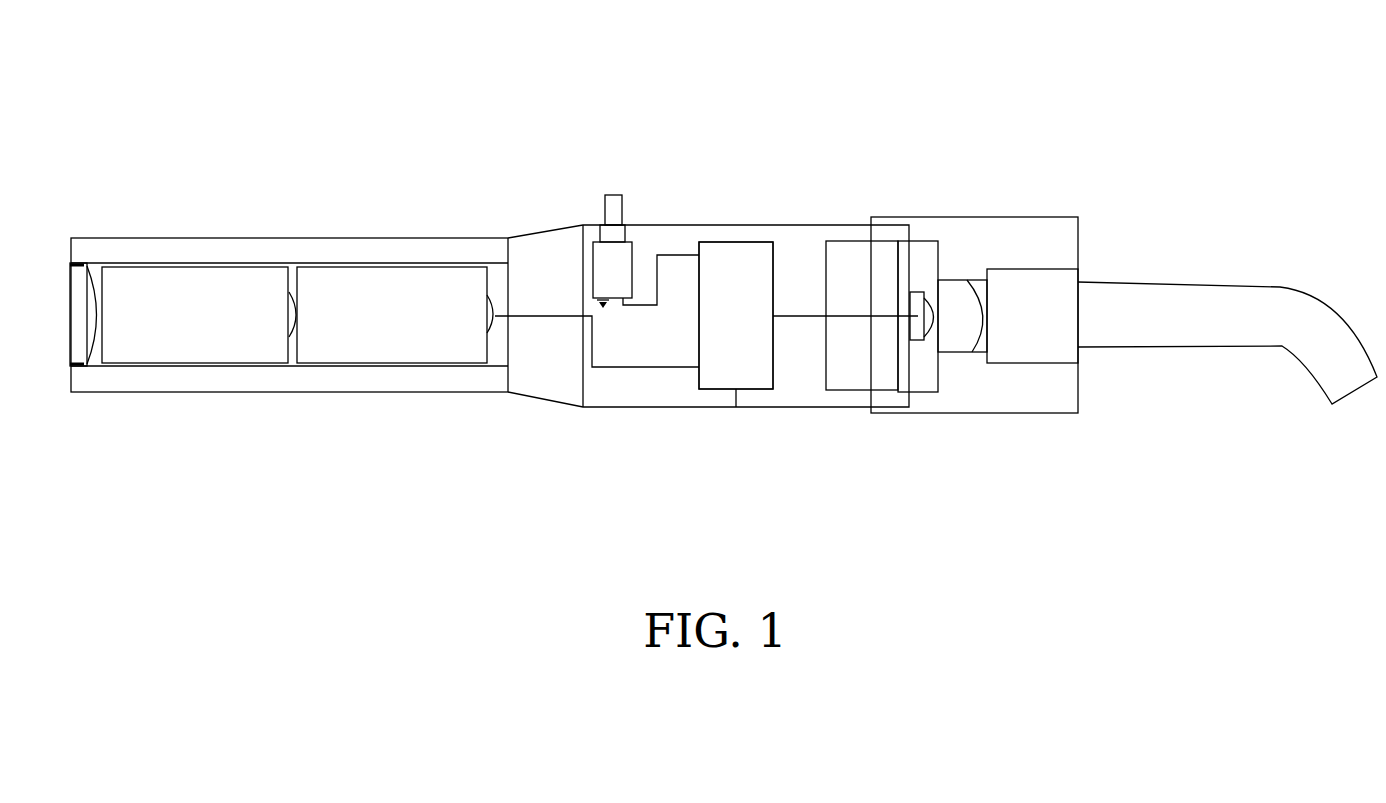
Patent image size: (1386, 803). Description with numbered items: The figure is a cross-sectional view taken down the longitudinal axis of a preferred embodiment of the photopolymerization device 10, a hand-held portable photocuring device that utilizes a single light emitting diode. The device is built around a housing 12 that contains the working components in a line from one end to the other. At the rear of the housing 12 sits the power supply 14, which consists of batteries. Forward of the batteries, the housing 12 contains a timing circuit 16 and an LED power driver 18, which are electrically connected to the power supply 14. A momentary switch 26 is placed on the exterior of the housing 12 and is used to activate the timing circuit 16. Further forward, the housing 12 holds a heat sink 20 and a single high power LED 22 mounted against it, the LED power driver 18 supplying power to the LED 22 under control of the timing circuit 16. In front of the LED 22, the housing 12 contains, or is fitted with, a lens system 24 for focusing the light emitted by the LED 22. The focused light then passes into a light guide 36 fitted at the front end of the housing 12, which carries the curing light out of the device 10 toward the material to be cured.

The photopolymerization device 10 is at (726, 218).
The housing 12 is at (256, 238).
The power supply 14 is at (366, 355).
The timing circuit 16 is at (722, 390).
The LED power driver 18 is at (736, 315).
The heat sink 20 is at (866, 241).
The single high power LED 22 is at (926, 340).
The lens system 24 is at (962, 280).
The momentary switch 26 is at (615, 195).
The light guide 36 is at (1263, 284).